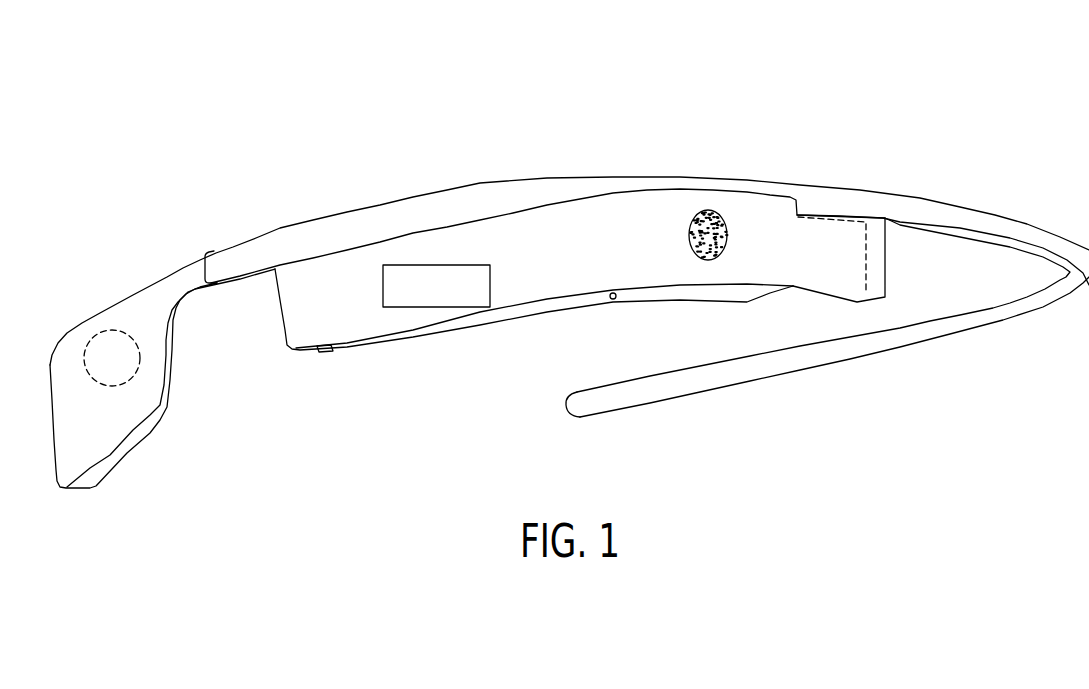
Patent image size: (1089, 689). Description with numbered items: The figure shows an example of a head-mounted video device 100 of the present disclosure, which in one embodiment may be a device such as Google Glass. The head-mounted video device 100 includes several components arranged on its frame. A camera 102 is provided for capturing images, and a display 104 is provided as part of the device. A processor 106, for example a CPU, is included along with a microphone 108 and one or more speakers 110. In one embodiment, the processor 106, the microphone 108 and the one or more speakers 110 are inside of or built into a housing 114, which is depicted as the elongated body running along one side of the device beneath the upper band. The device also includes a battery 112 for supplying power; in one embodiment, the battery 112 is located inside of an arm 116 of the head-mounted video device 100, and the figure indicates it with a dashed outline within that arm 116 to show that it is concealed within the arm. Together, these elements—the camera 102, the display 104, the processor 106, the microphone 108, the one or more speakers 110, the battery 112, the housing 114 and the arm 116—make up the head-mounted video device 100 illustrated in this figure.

The head-mounted video device 100 is at (1026, 106).
The camera 102 is at (707, 210).
The display 104 is at (818, 275).
The processor 106 is at (435, 265).
The microphone 108 is at (615, 300).
The speakers 110 is at (327, 355).
The battery 112 is at (128, 333).
The housing 114 is at (443, 327).
The arm 116 is at (77, 327).